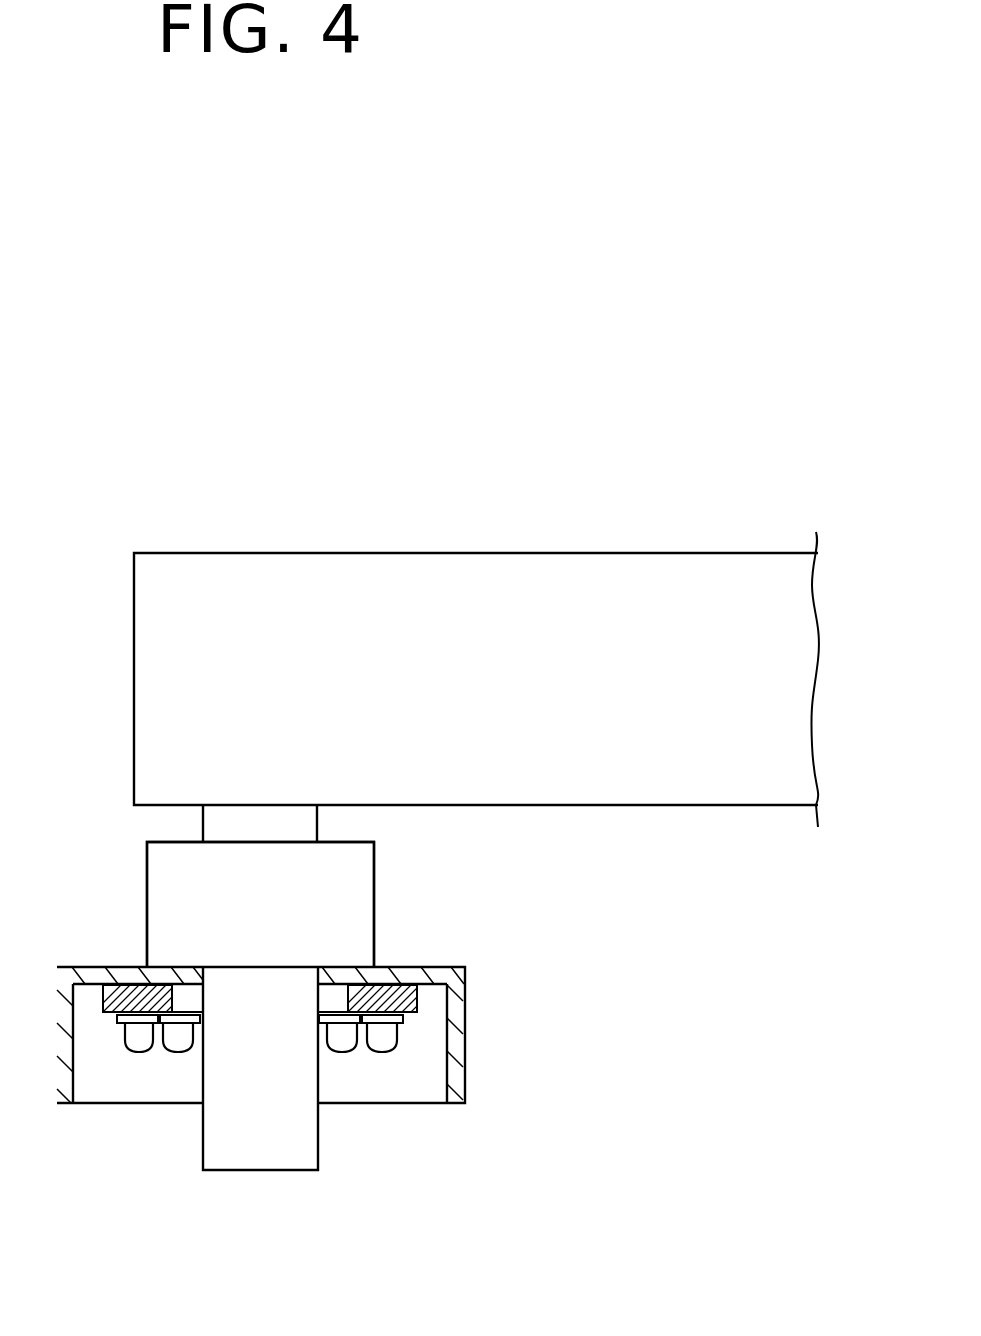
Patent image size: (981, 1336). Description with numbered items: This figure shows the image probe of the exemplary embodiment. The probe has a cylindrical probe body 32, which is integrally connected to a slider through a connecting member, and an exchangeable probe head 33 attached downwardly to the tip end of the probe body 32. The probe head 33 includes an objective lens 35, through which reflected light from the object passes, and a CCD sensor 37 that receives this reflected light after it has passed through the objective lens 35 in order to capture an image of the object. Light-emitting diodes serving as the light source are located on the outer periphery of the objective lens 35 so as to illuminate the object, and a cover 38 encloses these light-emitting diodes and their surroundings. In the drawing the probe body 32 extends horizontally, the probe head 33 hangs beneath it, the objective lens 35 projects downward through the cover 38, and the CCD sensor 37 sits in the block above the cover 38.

The probe body 32 is at (625, 569).
The probe head 33 is at (147, 913).
The objective lens 35 is at (262, 1157).
The CCD sensor 37 is at (360, 907).
The cover 38 is at (465, 1033).